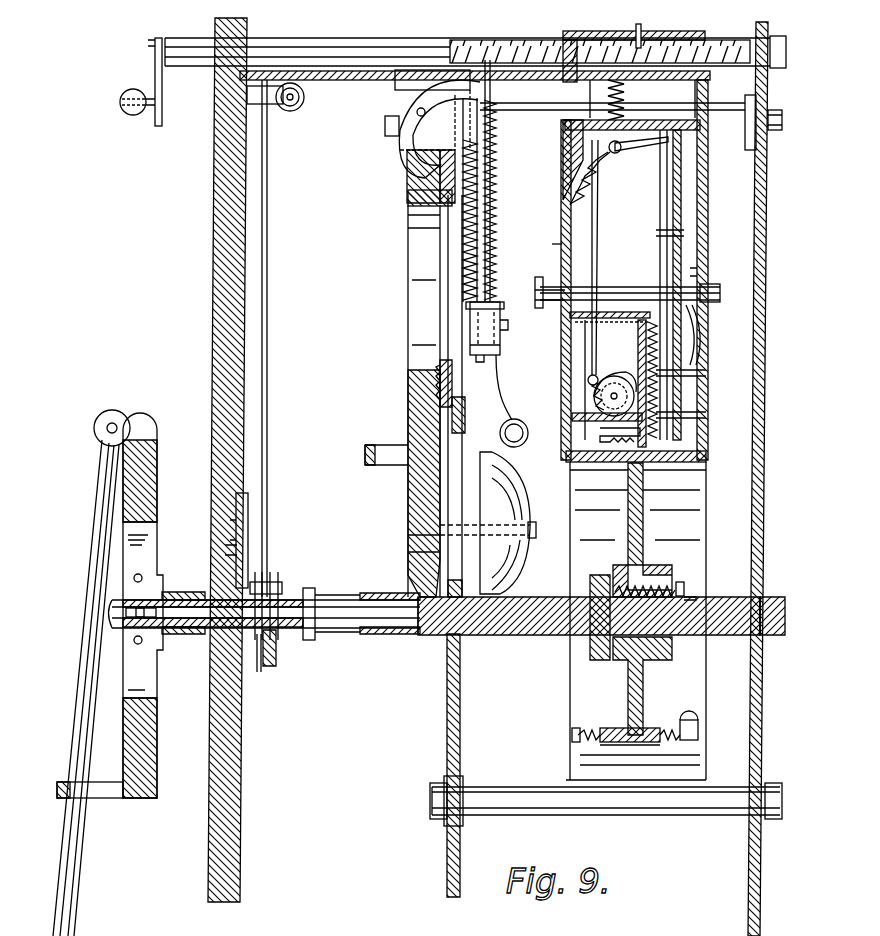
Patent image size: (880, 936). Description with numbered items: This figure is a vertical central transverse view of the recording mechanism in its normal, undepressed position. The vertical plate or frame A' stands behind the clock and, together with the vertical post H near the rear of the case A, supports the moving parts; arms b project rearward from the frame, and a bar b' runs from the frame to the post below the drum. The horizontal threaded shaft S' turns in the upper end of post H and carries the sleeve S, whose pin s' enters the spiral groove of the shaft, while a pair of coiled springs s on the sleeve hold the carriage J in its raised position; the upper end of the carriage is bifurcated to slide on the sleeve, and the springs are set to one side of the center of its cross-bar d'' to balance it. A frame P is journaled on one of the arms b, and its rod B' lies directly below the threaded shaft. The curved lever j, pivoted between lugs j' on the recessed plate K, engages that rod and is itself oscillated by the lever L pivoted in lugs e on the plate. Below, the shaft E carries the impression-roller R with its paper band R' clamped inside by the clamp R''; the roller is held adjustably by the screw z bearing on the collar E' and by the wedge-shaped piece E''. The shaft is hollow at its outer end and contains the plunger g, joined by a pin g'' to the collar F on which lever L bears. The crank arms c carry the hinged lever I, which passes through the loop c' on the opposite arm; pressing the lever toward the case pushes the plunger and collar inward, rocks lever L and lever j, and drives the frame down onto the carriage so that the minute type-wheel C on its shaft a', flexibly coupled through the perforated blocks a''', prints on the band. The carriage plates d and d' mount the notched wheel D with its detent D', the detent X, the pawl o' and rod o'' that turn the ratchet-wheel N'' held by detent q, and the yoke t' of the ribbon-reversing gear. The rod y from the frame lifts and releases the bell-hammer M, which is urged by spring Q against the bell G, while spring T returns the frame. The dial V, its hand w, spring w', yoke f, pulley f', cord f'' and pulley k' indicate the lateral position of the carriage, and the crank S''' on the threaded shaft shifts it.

The inclosing case A is at (214, 460).
The vertical metal plate or frame A' is at (439, 765).
The vertical post H is at (768, 238).
The horizontal threaded shaft S' is at (475, 40).
The sleeve S is at (634, 44).
The pin s' is at (646, 27).
The coiled springs s is at (621, 98).
The hand wheel S''' is at (141, 82).
The small grooved pulley k' is at (279, 107).
The curved lever j is at (422, 136).
The lugs j' is at (384, 111).
The coiled spring T is at (491, 178).
The bell-rod y is at (478, 158).
The spring Q is at (490, 240).
The lever L is at (407, 337).
The recessed plate K is at (450, 396).
The lugs e is at (440, 385).
The bell-hammer M is at (514, 420).
The bell G is at (486, 452).
The cord f'' is at (276, 338).
The dial V is at (248, 528).
The hand w is at (211, 547).
The spring w' is at (281, 598).
The collar F is at (378, 597).
The plunger g is at (183, 628).
The pin g'' is at (331, 601).
The grooved pulley f' is at (257, 660).
The yoke f is at (273, 652).
The crank arms c is at (132, 604).
The loop c' is at (343, 482).
The lever I is at (84, 546).
The carriage J is at (708, 212).
The rod B' is at (631, 142).
The cross-bar d'' is at (612, 99).
The frame P is at (750, 95).
The arms b is at (778, 112).
The detent D' is at (641, 153).
The rod o'' is at (608, 257).
The pawl o' is at (583, 373).
The notched wheel D is at (672, 285).
The minute type-wheel C is at (682, 176).
The rear plate d is at (708, 267).
The detent X is at (697, 340).
The minute-wheel shaft a' is at (630, 282).
The perforated blocks a''' is at (536, 291).
The front plate d' is at (550, 249).
The yoke t' is at (613, 379).
The ratchet-wheel N'' is at (614, 382).
The detent q is at (600, 436).
The record band R' is at (649, 455).
The impression-roller R is at (636, 621).
The clamp R'' is at (636, 735).
The collar E' is at (594, 601).
The screw z is at (678, 582).
The wedge-shaped piece E'' is at (708, 583).
The shaft E is at (601, 634).
The arm or bar b' is at (606, 791).